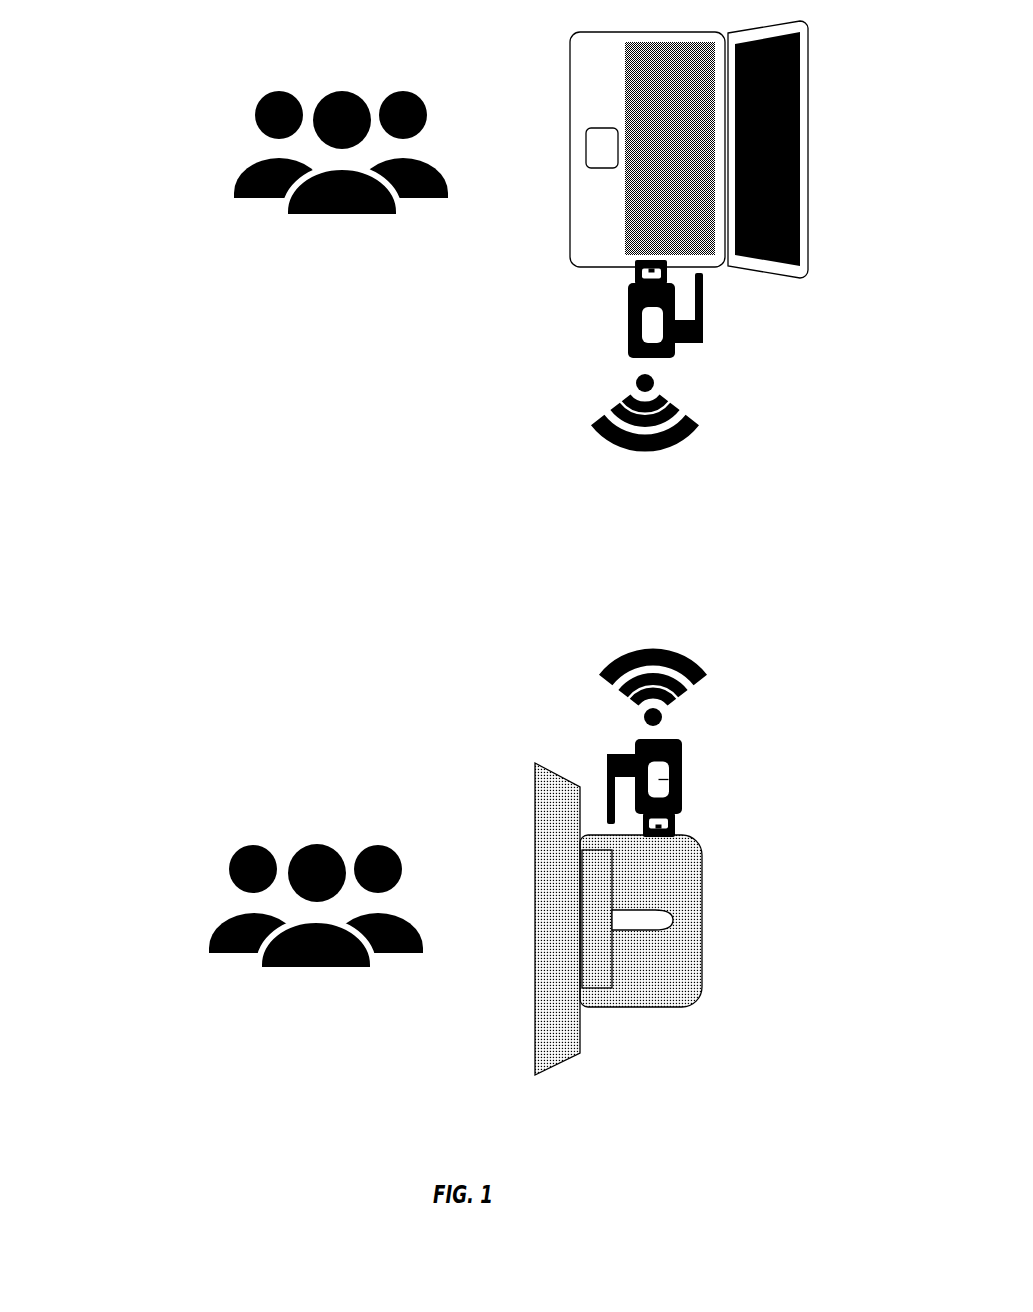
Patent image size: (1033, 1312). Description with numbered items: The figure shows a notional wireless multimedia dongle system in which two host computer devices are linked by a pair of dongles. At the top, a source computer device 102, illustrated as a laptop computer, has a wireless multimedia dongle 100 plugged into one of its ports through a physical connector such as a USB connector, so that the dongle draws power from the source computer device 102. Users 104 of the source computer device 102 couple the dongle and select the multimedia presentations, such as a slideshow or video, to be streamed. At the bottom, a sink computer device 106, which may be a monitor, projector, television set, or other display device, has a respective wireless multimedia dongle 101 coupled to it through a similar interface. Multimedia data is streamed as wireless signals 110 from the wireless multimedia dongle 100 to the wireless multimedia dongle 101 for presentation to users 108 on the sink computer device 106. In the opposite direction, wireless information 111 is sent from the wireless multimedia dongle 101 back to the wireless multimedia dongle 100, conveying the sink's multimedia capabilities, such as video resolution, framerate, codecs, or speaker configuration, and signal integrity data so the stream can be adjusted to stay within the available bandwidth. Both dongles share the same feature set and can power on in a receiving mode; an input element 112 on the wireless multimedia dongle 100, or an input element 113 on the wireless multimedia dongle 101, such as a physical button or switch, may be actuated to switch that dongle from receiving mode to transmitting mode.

The wireless multimedia dongle 100 is at (688, 309).
The wireless multimedia dongle 101 is at (678, 780).
The source computer device 102 is at (845, 144).
The users 104 is at (206, 144).
The sink computer device 106 is at (772, 925).
The users 108 is at (156, 917).
The wireless signals 110 is at (570, 417).
The wireless information 111 is at (558, 681).
The input element 112 is at (652, 328).
The input element 113 is at (617, 763).